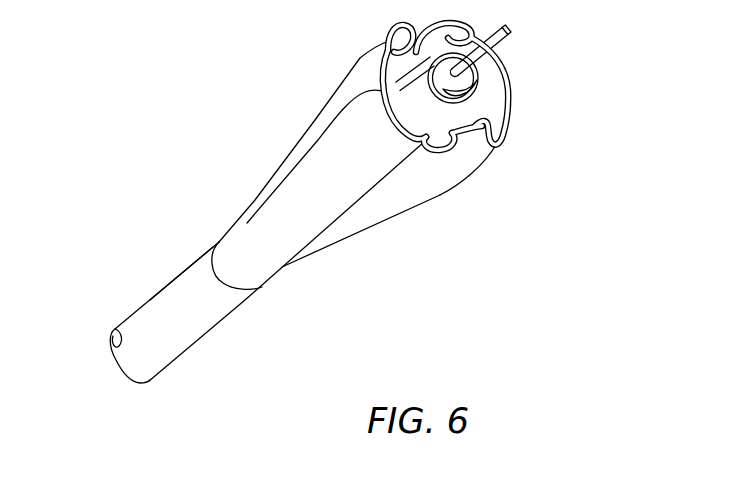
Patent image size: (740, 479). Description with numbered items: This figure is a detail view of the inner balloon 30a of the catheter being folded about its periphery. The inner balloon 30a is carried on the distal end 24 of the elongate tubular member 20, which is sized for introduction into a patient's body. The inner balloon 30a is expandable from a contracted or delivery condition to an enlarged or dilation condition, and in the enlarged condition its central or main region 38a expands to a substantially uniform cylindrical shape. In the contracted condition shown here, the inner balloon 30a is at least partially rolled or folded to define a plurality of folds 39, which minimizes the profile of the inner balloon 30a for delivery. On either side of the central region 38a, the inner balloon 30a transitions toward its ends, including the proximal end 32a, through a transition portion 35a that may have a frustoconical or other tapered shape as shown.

The elongate tubular member 20 is at (125, 299).
The distal end 24 is at (185, 268).
The proximal end 32a is at (240, 223).
The transition portion 35a is at (346, 237).
The inner balloon 30a is at (414, 216).
The central region 38a is at (461, 178).
The folds 39 is at (507, 123).